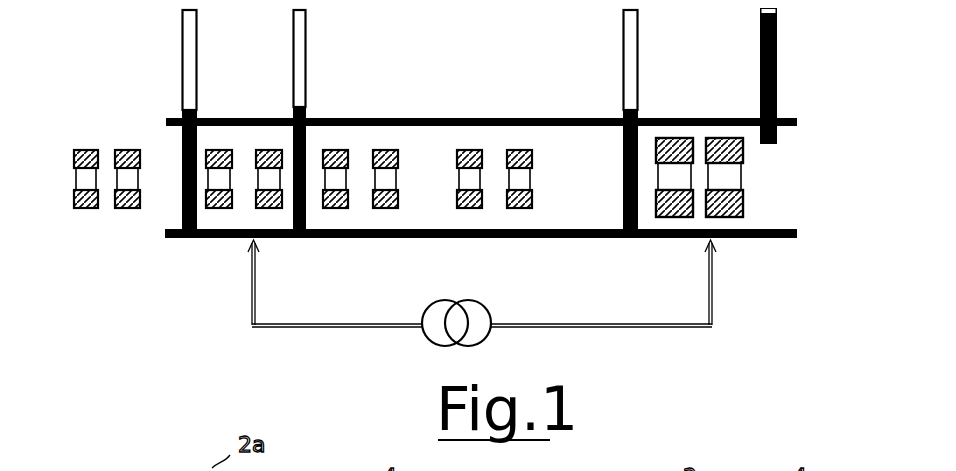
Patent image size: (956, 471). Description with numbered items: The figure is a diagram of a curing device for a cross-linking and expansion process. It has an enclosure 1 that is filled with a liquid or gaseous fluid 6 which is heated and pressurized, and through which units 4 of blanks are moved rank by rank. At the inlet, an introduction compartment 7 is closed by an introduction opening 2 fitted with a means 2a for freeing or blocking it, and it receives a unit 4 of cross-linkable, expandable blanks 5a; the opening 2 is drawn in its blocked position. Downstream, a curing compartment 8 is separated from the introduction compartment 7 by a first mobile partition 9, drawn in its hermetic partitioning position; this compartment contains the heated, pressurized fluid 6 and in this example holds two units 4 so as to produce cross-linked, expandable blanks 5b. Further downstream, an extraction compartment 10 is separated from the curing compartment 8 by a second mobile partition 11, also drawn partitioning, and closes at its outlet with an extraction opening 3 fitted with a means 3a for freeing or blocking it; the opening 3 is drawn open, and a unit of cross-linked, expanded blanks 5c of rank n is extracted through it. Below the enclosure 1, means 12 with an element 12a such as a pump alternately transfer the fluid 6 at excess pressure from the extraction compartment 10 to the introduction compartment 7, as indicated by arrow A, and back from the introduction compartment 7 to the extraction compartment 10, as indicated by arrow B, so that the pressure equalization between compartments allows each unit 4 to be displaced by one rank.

The enclosure 1 is at (200, 250).
The introduction opening 2 is at (180, 150).
The freeing or blocking means 2a is at (179, 68).
The extraction opening 3 is at (772, 145).
The freeing or blocking means 3a is at (778, 8).
The unit 4 is at (94, 171).
The cross-linkable, expandable blanks 5a is at (76, 210).
The cross-linked, expandable blanks 5b is at (526, 150).
The cross-linked, expanded blanks 5c is at (745, 205).
The fluid 6 is at (590, 196).
The introduction compartment 7 is at (240, 245).
The curing compartment 8 is at (433, 238).
The first mobile partition 9 is at (308, 140).
The extraction compartment 10 is at (668, 240).
The second mobile partition 11 is at (640, 137).
The fluid transfer means 12 is at (525, 327).
The fluid setting-in-motion element 12a is at (486, 302).
The rank n is at (733, 136).
The arrow A is at (277, 262).
The arrow B is at (733, 262).